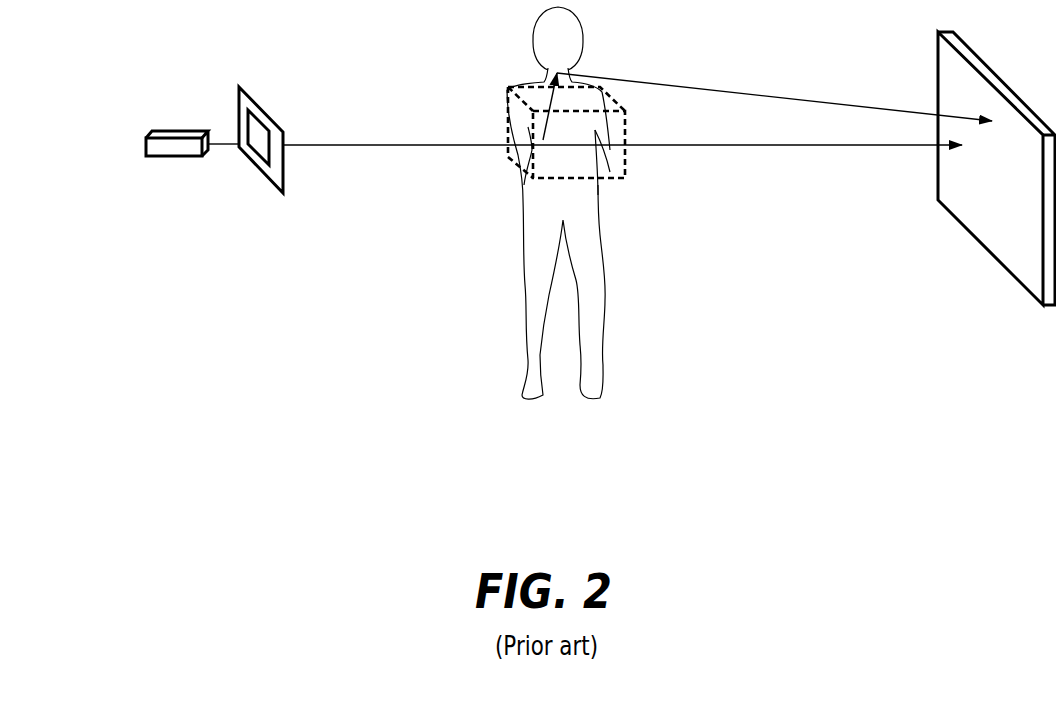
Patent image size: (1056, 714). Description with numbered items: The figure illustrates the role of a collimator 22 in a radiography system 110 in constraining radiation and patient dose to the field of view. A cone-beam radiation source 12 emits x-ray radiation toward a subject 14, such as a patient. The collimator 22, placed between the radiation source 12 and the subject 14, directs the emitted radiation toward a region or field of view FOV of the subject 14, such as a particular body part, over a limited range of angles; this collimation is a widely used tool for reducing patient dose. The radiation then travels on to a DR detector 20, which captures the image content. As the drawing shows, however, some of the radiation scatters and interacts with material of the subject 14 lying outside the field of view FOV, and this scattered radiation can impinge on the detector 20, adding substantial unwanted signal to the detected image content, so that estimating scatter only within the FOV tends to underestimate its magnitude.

The cone-beam radiation source 12 is at (180, 123).
The collimator 22 is at (272, 113).
The subject 14 is at (605, 307).
The DR detector 20 is at (958, 233).
The radiography system 110 is at (257, 376).
The field of view FOV is at (595, 103).